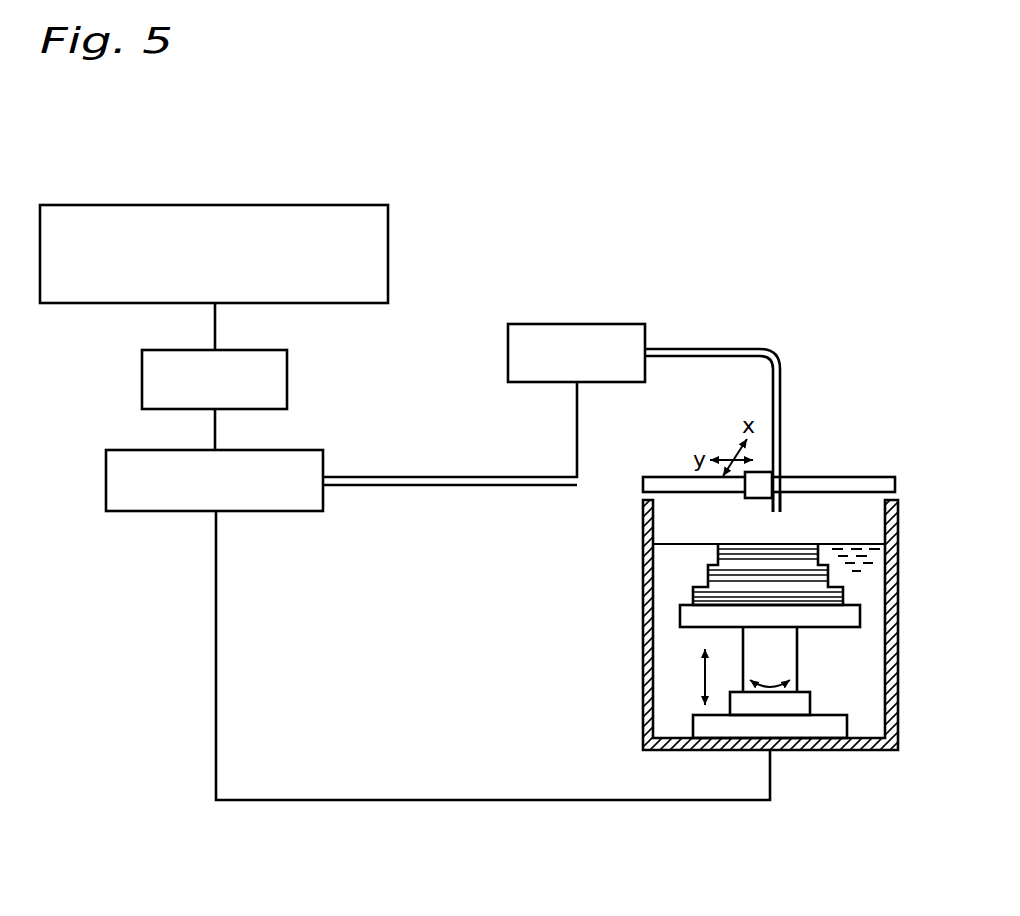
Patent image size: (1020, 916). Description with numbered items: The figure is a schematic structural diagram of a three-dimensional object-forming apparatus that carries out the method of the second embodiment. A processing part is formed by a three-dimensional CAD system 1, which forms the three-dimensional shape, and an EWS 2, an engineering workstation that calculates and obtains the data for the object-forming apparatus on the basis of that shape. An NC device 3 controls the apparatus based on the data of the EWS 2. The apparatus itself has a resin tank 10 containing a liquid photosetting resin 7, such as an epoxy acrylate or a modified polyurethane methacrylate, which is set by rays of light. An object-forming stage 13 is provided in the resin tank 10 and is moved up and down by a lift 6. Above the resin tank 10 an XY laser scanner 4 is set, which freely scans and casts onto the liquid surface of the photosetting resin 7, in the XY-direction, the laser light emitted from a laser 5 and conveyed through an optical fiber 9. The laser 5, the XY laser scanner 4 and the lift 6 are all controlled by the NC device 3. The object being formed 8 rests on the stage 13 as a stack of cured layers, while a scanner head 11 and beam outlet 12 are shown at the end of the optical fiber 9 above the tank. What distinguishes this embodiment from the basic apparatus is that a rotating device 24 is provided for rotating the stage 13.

The three-dimensional CAD system 1 is at (358, 204).
The EWS (engineering workstation) 2 is at (285, 350).
The NC device 3 is at (305, 450).
The XY laser scanner 4 is at (877, 477).
The laser 5 is at (628, 324).
The lift 6 is at (795, 728).
The liquid photosetting resin 7 is at (668, 682).
The three-dimensional shaped object 8 is at (710, 573).
The optical fiber 9 is at (733, 349).
The resin tank 10 is at (647, 602).
The X-Y scanner head 11 is at (763, 472).
The laser beam nozzle 12 is at (782, 498).
The object-forming stage 13 is at (688, 618).
The rotating device 24 is at (803, 707).